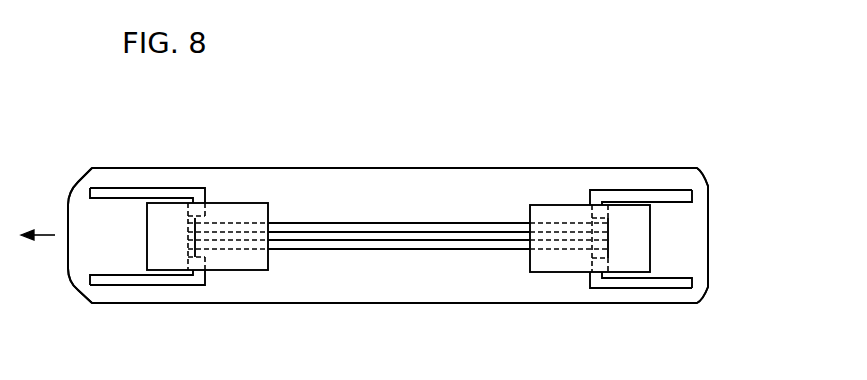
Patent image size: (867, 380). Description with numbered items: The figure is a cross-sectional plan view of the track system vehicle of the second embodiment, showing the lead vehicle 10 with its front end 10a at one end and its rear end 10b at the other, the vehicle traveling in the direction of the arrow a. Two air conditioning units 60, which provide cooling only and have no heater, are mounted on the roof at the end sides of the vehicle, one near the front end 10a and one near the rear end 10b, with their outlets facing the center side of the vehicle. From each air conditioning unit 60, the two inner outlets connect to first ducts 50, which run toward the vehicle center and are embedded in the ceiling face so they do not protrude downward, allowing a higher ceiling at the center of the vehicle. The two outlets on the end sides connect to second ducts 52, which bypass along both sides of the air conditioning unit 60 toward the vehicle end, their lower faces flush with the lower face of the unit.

The lead vehicle 10 is at (366, 168).
The front end 10a is at (73, 186).
The rear end 10b is at (708, 234).
The first duct 50 is at (338, 223).
The second duct 52 is at (188, 188).
The air conditioning unit 60 is at (242, 203).
The travel direction arrow a is at (40, 235).